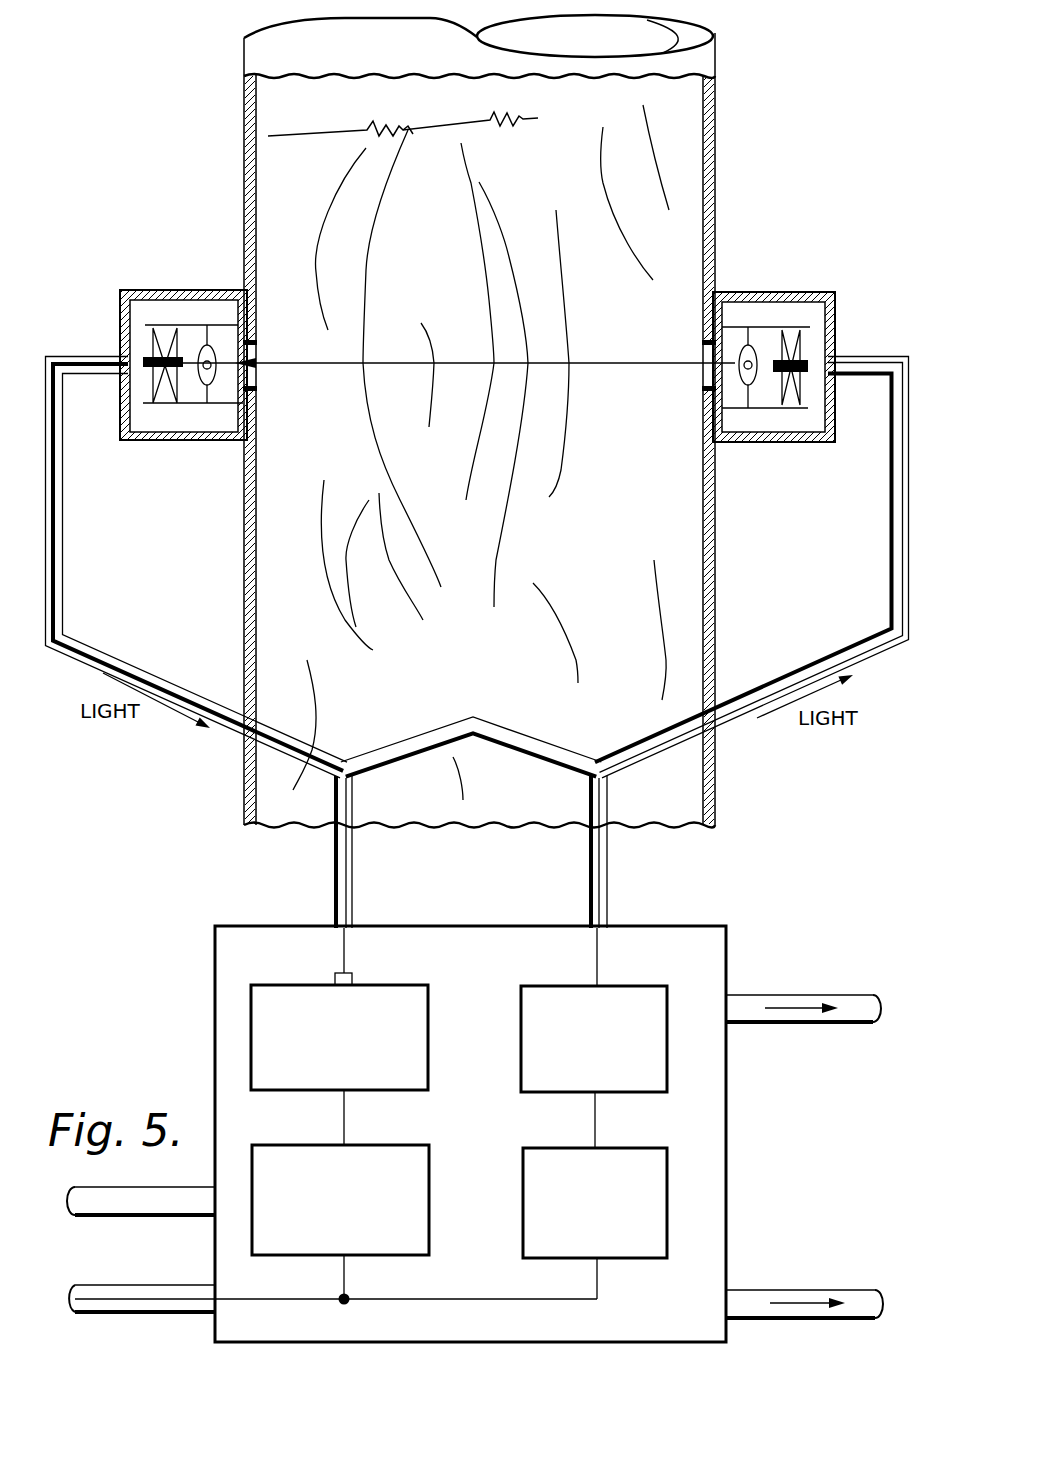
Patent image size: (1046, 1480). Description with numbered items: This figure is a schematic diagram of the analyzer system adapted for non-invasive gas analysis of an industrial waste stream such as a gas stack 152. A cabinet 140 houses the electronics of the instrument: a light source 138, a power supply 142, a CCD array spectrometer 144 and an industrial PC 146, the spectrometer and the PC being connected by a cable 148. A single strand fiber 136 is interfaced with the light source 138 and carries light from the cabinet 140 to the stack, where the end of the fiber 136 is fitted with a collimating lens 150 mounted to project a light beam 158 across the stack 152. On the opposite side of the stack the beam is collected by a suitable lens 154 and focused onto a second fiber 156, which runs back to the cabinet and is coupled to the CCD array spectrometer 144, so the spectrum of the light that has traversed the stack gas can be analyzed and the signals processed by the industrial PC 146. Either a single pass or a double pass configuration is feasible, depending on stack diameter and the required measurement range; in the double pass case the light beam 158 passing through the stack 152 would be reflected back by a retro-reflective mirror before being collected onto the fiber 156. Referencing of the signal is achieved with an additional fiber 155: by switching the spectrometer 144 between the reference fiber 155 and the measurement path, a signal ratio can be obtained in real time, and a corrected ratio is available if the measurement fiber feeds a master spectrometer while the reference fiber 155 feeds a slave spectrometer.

The single strand fiber 136 is at (892, 552).
The light source 138 is at (633, 985).
The cabinet 140 is at (728, 965).
The power supply 142 is at (633, 1148).
The CCD array spectrometer 144 is at (372, 985).
The industrial PC 146 is at (430, 1202).
The cable 148 is at (345, 1120).
The collimating lens 150 is at (773, 292).
The stack 152 is at (716, 233).
The lens 154 is at (200, 290).
The reference fiber 155 is at (473, 714).
The second fiber 156 is at (63, 545).
The light beam 158 is at (688, 365).